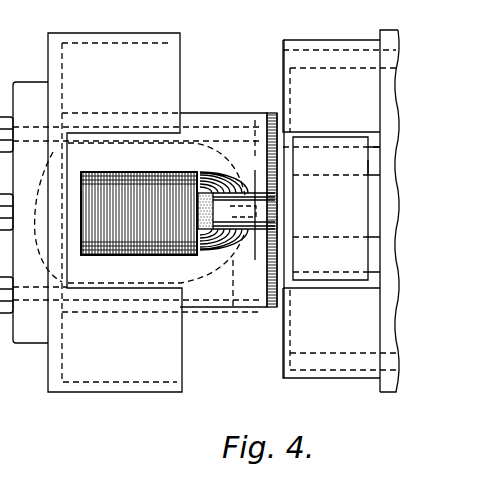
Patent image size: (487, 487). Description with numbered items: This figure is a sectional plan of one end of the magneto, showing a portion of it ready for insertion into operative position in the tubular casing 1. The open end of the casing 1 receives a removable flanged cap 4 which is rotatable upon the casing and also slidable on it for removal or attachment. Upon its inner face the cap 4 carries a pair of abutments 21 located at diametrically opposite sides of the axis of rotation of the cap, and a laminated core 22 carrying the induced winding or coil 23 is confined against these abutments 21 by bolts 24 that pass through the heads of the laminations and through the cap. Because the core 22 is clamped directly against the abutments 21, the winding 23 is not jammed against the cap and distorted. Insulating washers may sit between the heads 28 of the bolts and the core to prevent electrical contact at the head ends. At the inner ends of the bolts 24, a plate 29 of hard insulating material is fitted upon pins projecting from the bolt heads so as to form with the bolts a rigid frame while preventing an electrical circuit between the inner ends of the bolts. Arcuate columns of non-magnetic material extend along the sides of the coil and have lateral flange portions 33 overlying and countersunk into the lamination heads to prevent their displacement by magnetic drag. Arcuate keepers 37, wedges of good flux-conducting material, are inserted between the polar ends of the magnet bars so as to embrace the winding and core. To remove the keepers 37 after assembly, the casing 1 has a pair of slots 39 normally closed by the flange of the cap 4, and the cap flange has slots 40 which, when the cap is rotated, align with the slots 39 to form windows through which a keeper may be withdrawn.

The tubular casing 1 is at (390, 32).
The flanged cap 4 is at (48, 58).
The abutments 21 is at (72, 192).
The laminated core 22 is at (132, 212).
The winding or coil 23 is at (235, 257).
The bolts 24 is at (7, 215).
The heads of the bolts 28 is at (255, 195).
The insulating plate 29 is at (267, 247).
The lateral flange portions 33 is at (223, 113).
The arcuate keepers 37 is at (345, 258).
The slots 39 is at (318, 130).
The slots 40 is at (170, 140).